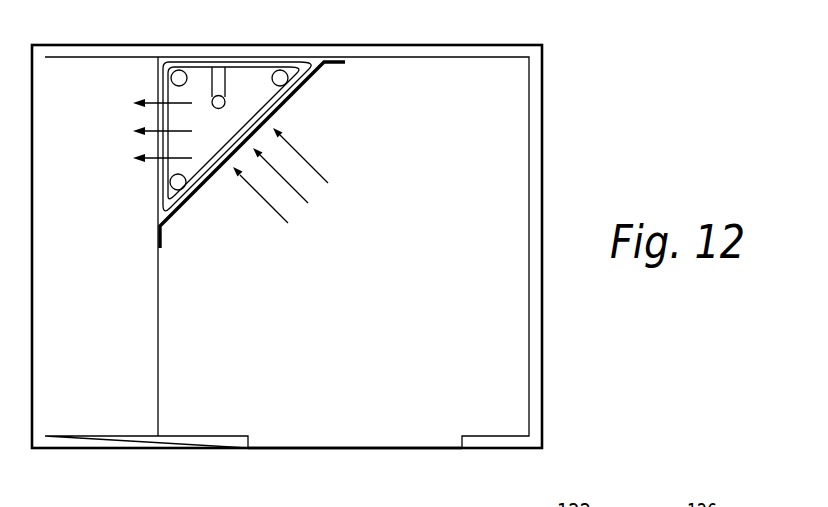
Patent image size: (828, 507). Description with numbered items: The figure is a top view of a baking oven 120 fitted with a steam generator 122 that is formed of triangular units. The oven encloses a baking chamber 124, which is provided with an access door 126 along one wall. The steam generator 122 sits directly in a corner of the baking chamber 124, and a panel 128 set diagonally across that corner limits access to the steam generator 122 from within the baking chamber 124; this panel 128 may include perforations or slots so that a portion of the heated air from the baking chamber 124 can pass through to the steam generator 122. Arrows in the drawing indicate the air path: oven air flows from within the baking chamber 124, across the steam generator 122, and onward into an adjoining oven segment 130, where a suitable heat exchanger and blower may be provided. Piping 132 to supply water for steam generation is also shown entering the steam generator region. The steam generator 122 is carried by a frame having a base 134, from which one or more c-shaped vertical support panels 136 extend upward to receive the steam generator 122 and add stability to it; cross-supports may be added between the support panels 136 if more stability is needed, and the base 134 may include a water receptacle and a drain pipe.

The baking oven 120 is at (584, 105).
The steam generator 122 is at (246, 93).
The baking chamber 124 is at (458, 338).
The access door 126 is at (343, 442).
The panel 128 is at (212, 182).
The oven segment 130 is at (87, 117).
The piping 132 is at (212, 88).
The base 134 is at (278, 107).
The c-shaped vertical support panels 136 is at (283, 65).